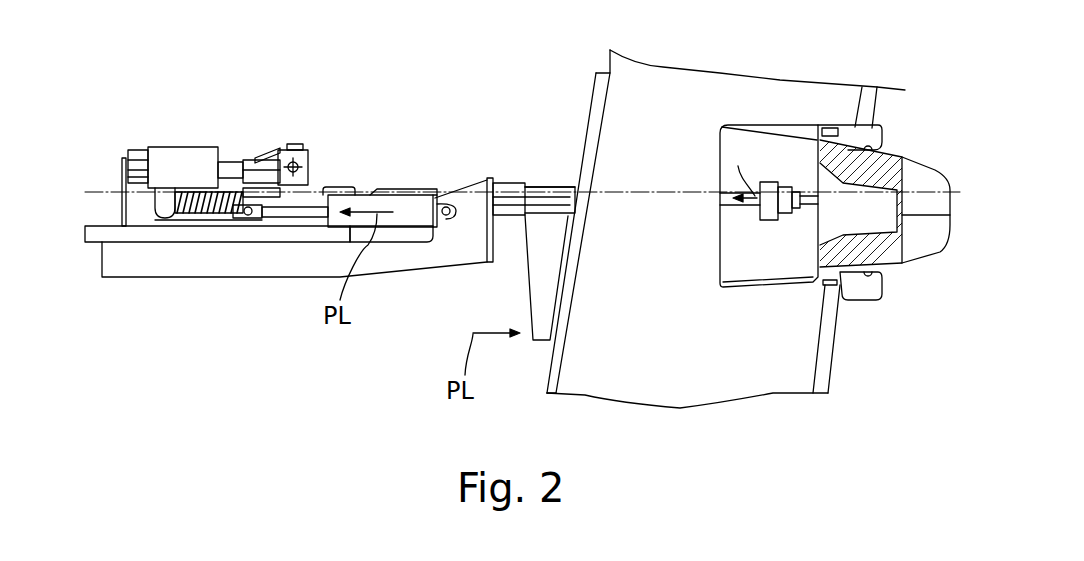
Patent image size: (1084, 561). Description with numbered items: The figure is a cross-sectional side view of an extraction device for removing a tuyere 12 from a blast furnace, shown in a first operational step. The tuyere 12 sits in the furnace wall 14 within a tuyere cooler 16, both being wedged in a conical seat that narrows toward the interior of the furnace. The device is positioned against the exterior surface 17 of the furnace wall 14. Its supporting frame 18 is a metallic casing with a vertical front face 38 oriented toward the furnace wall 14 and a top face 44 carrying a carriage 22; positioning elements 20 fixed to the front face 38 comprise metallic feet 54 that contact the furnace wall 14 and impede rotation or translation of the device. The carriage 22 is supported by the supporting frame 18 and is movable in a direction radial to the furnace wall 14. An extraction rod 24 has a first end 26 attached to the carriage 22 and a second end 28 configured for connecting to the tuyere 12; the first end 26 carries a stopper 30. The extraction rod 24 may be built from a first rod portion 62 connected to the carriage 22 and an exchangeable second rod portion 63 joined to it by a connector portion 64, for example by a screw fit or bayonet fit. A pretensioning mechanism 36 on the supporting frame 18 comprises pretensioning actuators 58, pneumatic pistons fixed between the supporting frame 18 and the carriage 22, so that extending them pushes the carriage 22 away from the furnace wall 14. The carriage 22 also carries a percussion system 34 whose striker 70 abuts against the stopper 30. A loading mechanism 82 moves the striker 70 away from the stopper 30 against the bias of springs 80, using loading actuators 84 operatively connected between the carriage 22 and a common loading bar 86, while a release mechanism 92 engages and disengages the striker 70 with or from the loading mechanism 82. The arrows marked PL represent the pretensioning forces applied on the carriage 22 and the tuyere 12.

The tuyere 12 is at (890, 168).
The furnace wall 14 is at (804, 340).
The tuyere cooler 16 is at (800, 122).
The exterior surface 17 is at (538, 384).
The supporting frame 18 is at (243, 258).
The positioning elements 20 is at (515, 149).
The carriage 22 is at (137, 214).
The extraction rod 24 is at (546, 184).
The first end 26 is at (196, 190).
The second end 28 is at (729, 206).
The stopper 30 is at (168, 216).
The percussion system 34 is at (261, 95).
The pretensioning mechanism 36 is at (431, 150).
The front face 38 is at (499, 238).
The top face 44 is at (410, 240).
The metallic feet 54 is at (537, 307).
The pretensioning actuators 58 is at (422, 200).
The first rod portion 62 is at (341, 185).
The second rod portion 63 is at (392, 190).
The connector portion 64 is at (379, 188).
The striker 70 is at (178, 214).
The springs 80 is at (221, 160).
The loading mechanism 82 is at (206, 92).
The loading actuators 84 is at (167, 150).
The common loading bar 86 is at (265, 155).
The release mechanism 92 is at (306, 124).